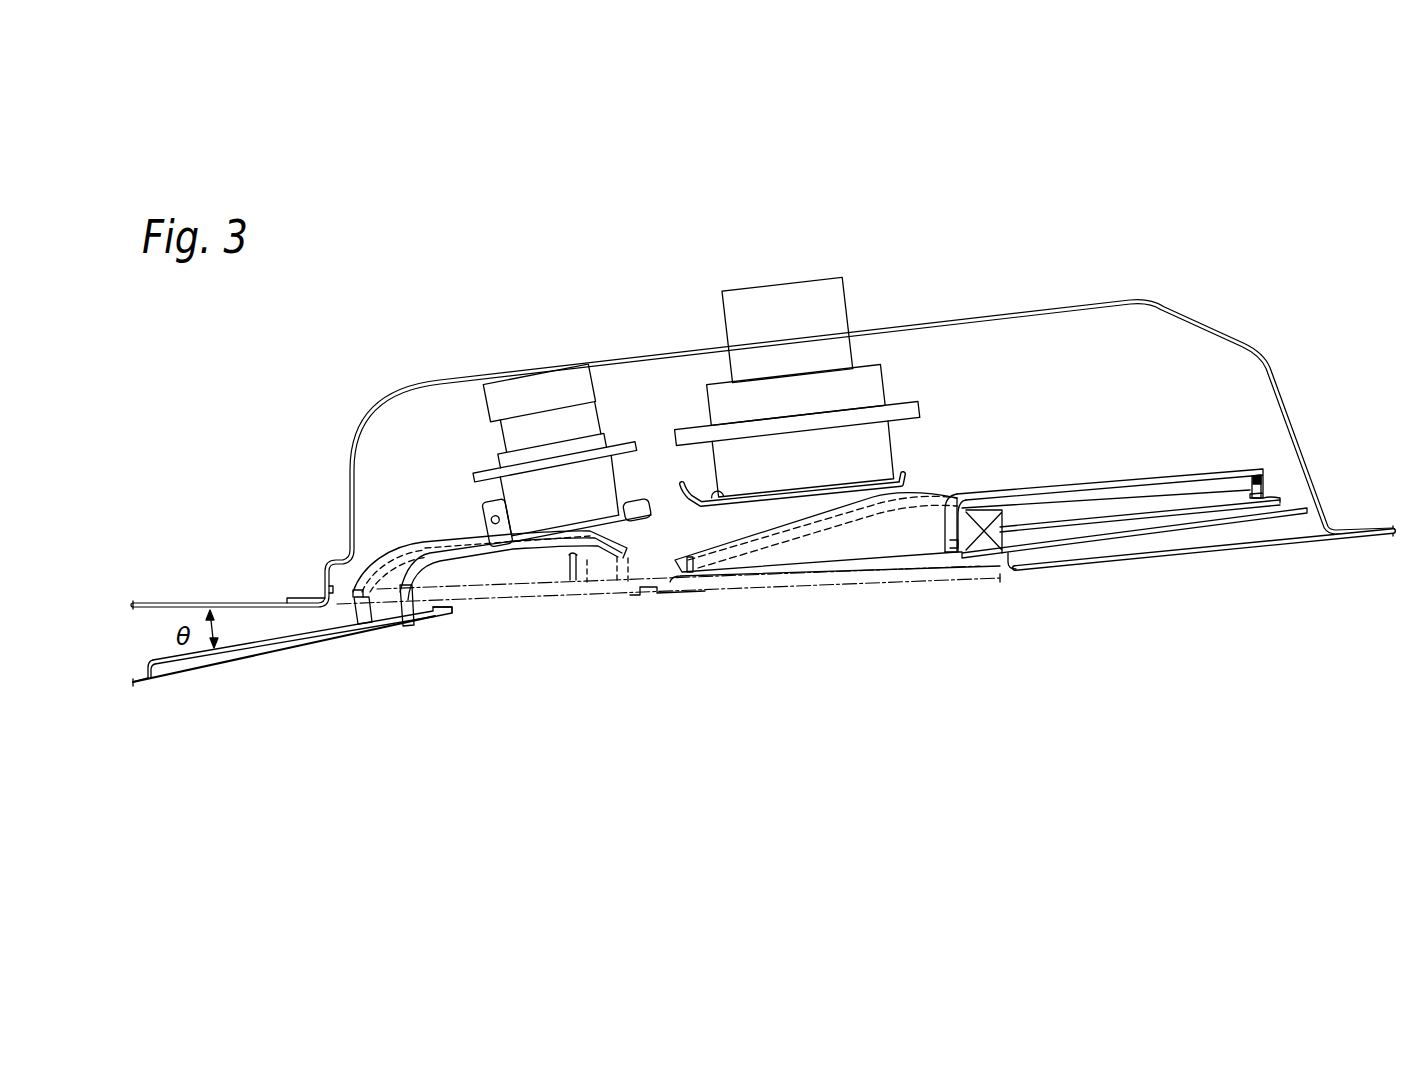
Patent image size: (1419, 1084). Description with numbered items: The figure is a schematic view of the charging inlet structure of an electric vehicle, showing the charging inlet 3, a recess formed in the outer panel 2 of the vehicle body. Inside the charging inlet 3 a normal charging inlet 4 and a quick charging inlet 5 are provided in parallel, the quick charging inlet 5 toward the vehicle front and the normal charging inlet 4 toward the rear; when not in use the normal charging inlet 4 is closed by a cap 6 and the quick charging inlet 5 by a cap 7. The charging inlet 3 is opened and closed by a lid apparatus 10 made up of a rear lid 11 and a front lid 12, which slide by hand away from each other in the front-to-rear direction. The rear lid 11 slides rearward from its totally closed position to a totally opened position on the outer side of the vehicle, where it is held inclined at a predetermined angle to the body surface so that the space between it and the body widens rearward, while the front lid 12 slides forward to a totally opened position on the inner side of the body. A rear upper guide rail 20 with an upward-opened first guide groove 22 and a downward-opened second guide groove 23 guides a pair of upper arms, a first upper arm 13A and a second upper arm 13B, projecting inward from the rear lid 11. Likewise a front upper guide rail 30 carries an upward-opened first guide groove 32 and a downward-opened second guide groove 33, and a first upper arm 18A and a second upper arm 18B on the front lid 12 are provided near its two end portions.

The outer panel 2 is at (1293, 547).
The charging inlet 3 is at (1052, 368).
The normal charging inlet 4 is at (555, 428).
The quick charging inlet 5 is at (858, 388).
The cap 6 is at (638, 516).
The cap 7 is at (766, 500).
The lid apparatus 10 is at (527, 707).
The rear lid 11 is at (267, 655).
The front lid 12 is at (1170, 520).
The first upper arm 13A is at (410, 615).
The second upper arm 13B is at (372, 620).
The first upper arm 18A is at (1258, 498).
The second upper arm 18B is at (1000, 558).
The rear upper guide rail 20 is at (597, 560).
The first guide groove 22 is at (452, 620).
The second guide groove 23 is at (383, 548).
The front upper guide rail 30 is at (912, 536).
The first guide groove 32 is at (1105, 480).
The second guide groove 33 is at (835, 535).